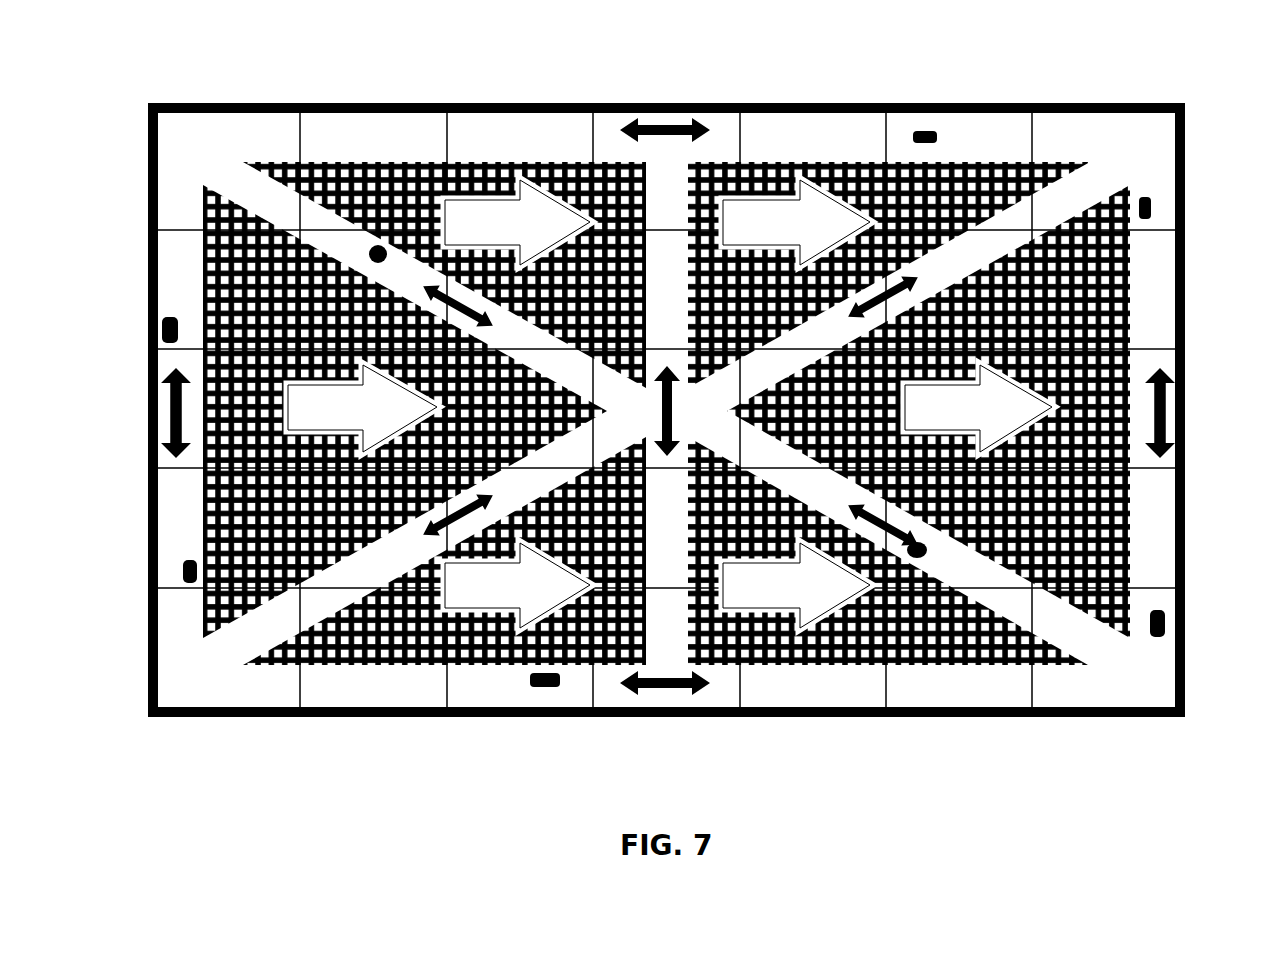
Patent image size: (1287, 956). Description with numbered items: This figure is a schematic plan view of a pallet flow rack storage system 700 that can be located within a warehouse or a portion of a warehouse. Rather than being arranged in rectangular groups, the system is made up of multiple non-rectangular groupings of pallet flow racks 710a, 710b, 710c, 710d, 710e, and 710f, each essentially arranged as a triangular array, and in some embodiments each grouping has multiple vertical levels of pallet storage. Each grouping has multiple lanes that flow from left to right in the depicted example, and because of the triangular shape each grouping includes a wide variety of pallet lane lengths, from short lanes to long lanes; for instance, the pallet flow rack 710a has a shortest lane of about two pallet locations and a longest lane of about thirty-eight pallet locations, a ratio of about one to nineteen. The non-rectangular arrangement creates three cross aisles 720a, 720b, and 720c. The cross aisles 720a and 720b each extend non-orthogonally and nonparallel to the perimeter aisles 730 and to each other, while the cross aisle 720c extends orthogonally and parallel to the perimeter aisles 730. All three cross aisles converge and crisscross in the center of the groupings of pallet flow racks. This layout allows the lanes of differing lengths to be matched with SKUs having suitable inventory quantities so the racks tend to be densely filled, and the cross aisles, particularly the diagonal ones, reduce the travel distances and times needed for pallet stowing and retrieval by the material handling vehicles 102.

The pallet flow rack storage system 700 is at (283, 70).
The material handling vehicle 102 is at (940, 137).
The pallet flow rack 710a is at (203, 602).
The pallet flow rack 710b is at (473, 662).
The pallet flow rack 710c is at (425, 165).
The pallet flow rack 710d is at (782, 663).
The pallet flow rack 710e is at (860, 160).
The pallet flow rack 710f is at (1130, 503).
The cross aisle 720a is at (277, 622).
The cross aisle 720b is at (285, 212).
The cross aisle 720c is at (665, 215).
The perimeter aisle 730 is at (540, 140).